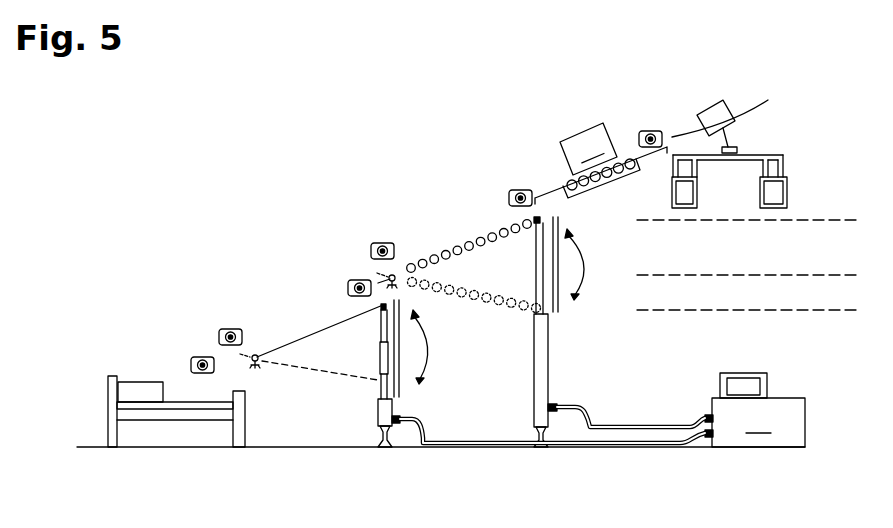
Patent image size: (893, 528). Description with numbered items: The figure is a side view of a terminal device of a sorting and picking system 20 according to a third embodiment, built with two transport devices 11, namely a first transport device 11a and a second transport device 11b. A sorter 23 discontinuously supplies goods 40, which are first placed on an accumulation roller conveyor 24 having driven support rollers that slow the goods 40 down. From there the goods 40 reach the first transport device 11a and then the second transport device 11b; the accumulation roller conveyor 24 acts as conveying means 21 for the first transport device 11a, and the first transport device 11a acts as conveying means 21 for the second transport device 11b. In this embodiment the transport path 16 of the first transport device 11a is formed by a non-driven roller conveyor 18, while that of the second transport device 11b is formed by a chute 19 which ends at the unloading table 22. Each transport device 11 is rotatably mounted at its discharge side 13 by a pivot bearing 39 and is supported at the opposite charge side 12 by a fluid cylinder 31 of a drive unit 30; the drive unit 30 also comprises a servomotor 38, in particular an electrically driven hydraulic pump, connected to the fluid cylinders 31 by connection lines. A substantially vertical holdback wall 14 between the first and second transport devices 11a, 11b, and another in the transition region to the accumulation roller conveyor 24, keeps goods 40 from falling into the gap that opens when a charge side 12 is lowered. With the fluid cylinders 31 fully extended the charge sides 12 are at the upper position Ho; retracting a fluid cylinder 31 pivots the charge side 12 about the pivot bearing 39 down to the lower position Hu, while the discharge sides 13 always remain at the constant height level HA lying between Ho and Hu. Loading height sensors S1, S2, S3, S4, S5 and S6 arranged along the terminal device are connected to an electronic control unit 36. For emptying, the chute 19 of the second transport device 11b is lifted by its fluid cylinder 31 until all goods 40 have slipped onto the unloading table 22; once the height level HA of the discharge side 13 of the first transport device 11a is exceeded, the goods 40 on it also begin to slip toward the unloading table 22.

The transport device 11 is at (434, 166).
The first transport device 11a is at (486, 240).
The second transport device 11b is at (325, 307).
The charge side 12 is at (382, 305).
The discharge side 13 is at (240, 355).
The holdback wall 14 is at (400, 391).
The transport path 16 is at (297, 337).
The roller conveyor 18 is at (471, 211).
The chute 19 is at (285, 308).
The sorting and picking system 20 is at (532, 86).
The conveying means 21 is at (543, 124).
The unloading table 22 is at (108, 387).
The sorter 23 is at (830, 153).
The accumulation roller conveyor 24 is at (625, 158).
The drive unit 30 is at (636, 462).
The fluid cylinder 31 is at (378, 410).
The electronic control unit 36 is at (720, 385).
The servomotor 38 is at (755, 422).
The pivot bearing 39 is at (226, 329).
The goods 40 is at (712, 110).
The loading height sensor S1 is at (651, 131).
The loading height sensor S2 is at (523, 189).
The loading height sensor S3 is at (372, 243).
The loading height sensor S4 is at (347, 284).
The loading height sensor S5 is at (230, 329).
The loading height sensor S6 is at (200, 357).
The upper position Ho is at (826, 218).
The height level HA is at (832, 273).
The lower position Hu is at (830, 312).